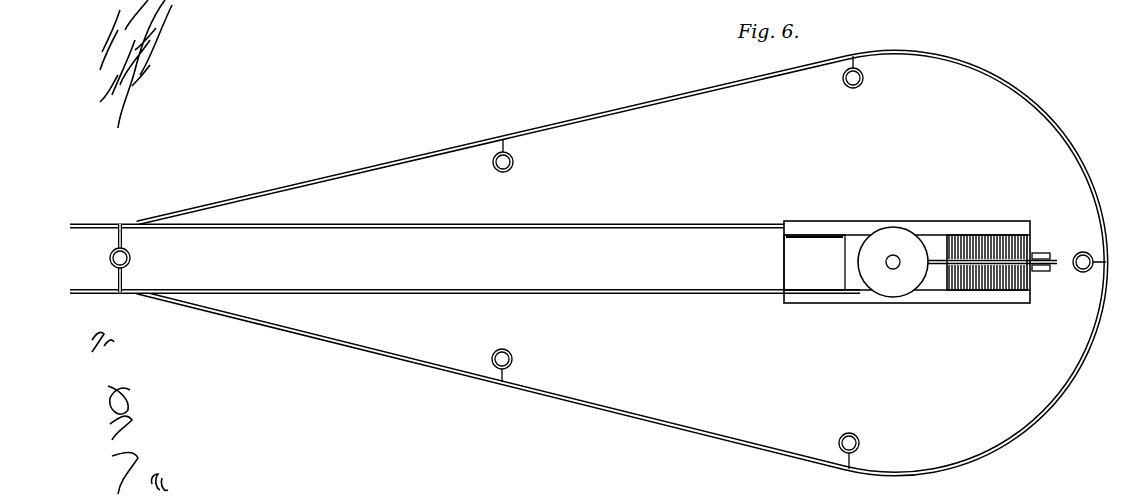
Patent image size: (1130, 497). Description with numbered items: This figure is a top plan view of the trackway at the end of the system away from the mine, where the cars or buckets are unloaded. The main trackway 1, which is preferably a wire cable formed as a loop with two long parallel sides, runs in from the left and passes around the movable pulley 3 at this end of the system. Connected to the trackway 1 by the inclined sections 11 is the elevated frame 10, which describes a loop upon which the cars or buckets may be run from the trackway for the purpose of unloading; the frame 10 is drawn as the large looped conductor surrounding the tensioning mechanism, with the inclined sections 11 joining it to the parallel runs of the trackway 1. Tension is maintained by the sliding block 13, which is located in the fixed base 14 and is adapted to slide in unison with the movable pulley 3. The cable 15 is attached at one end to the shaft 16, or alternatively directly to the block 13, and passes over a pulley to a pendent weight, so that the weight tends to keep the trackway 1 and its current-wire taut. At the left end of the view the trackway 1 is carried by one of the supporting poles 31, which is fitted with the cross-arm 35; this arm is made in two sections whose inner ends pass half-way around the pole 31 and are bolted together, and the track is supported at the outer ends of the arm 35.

The trackway 1 is at (620, 226).
The movable pulley 3 is at (893, 262).
The frame 10 is at (689, 95).
The inclined sections 11 is at (330, 183).
The sliding block 13 is at (976, 262).
The fixed base 14 is at (950, 298).
The cable 15 is at (1052, 262).
The shaft 16 is at (900, 266).
The poles 31 is at (131, 255).
The cross-arm 35 is at (124, 240).